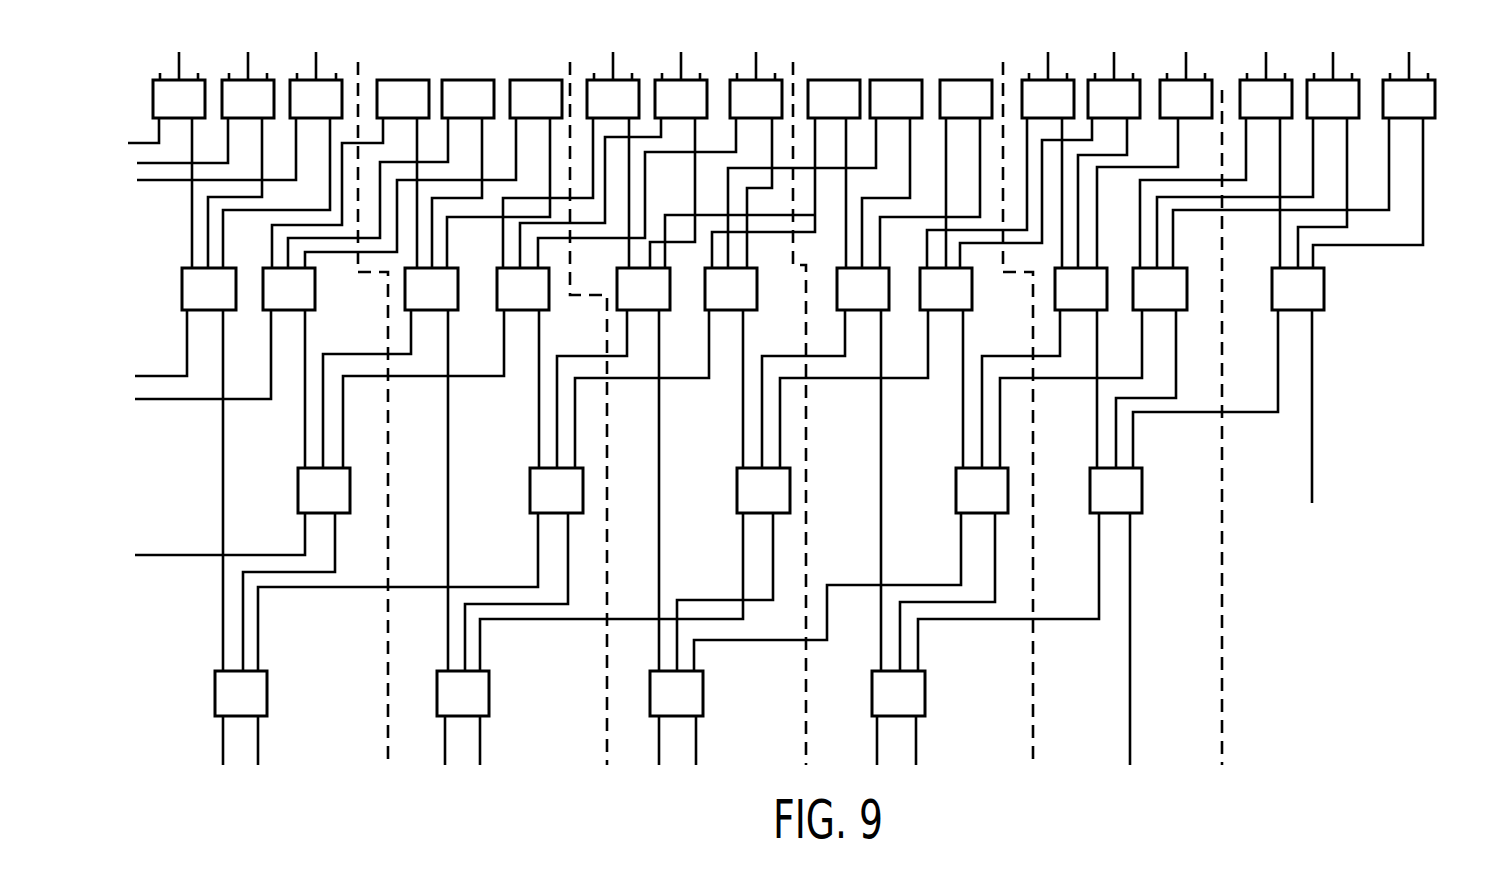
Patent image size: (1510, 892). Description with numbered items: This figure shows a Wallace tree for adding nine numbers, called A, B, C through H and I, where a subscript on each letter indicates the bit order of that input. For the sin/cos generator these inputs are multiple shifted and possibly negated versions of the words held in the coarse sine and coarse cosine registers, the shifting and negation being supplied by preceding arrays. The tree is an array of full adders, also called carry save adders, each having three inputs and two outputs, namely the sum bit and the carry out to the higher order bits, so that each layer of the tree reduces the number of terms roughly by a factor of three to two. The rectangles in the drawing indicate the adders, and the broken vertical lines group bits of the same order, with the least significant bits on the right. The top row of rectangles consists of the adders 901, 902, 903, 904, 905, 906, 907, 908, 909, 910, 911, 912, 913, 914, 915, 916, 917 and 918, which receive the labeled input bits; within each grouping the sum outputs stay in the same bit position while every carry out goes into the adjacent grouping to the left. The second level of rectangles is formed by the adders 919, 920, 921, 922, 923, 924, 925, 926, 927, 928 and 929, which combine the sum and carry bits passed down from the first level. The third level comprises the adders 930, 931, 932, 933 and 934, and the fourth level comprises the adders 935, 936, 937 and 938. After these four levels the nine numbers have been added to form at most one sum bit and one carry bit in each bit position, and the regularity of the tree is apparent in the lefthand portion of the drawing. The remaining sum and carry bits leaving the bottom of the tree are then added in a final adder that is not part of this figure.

The adder 901 is at (1435, 100).
The adder 902 is at (1360, 118).
The adder 903 is at (1267, 118).
The adder 904 is at (1212, 92).
The adder 905 is at (1110, 118).
The adder 906 is at (1022, 92).
The adder 907 is at (963, 80).
The adder 908 is at (897, 80).
The adder 909 is at (817, 80).
The adder 910 is at (782, 97).
The adder 911 is at (685, 118).
The adder 912 is at (587, 97).
The adder 913 is at (528, 80).
The adder 914 is at (453, 80).
The adder 915 is at (415, 80).
The adder 916 is at (342, 95).
The adder 917 is at (274, 97).
The adder 918 is at (153, 95).
The adder 919 is at (1323, 310).
The adder 920 is at (1190, 308).
The adder 921 is at (1061, 311).
The adder 922 is at (972, 298).
The adder 923 is at (867, 312).
The adder 924 is at (755, 310).
The adder 925 is at (622, 310).
The adder 926 is at (549, 290).
The adder 927 is at (408, 310).
The adder 928 is at (315, 301).
The adder 929 is at (200, 310).
The adder 930 is at (1142, 492).
The adder 931 is at (978, 513).
The adder 932 is at (758, 513).
The adder 933 is at (554, 513).
The adder 934 is at (298, 497).
The adder 935 is at (927, 698).
The adder 936 is at (705, 698).
The adder 937 is at (489, 695).
The adder 938 is at (267, 695).